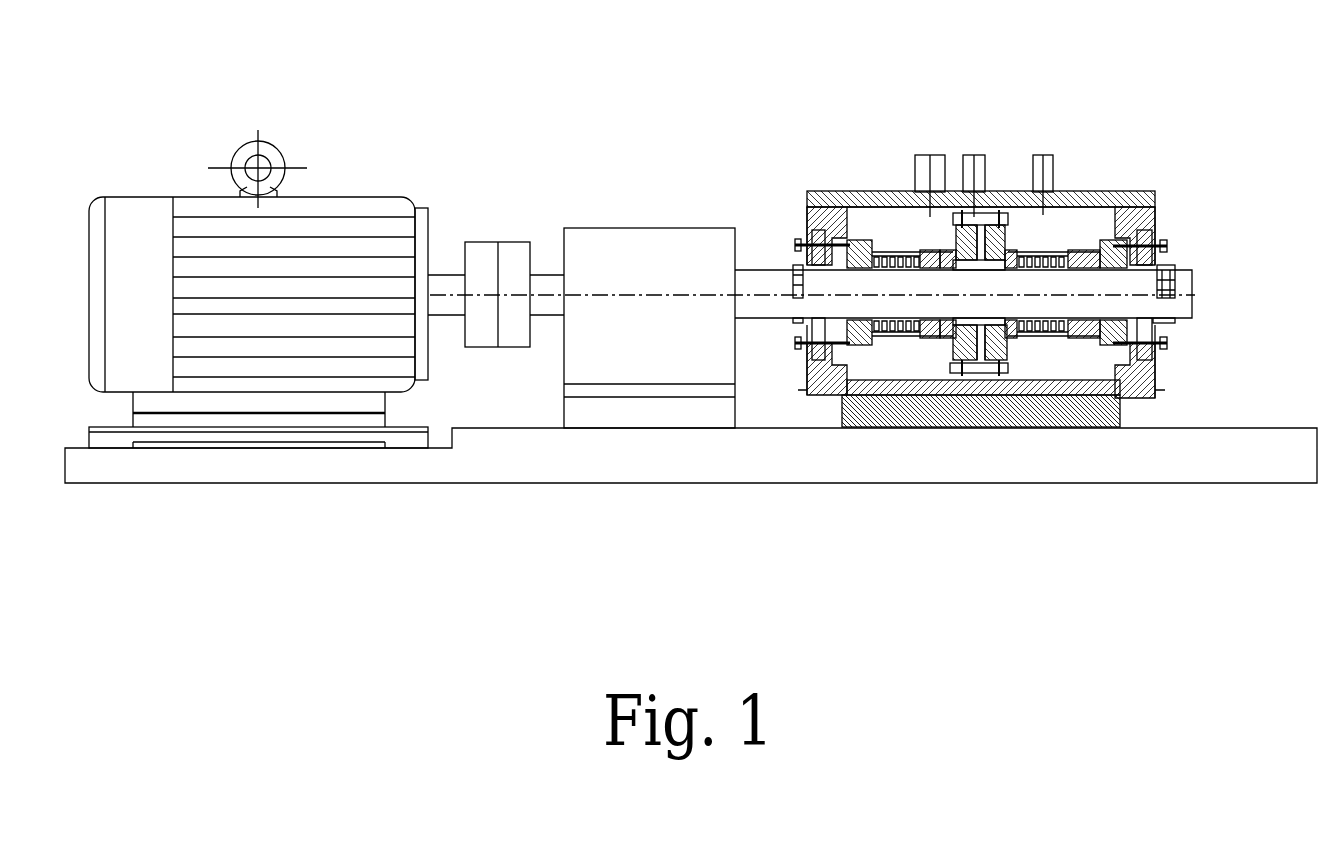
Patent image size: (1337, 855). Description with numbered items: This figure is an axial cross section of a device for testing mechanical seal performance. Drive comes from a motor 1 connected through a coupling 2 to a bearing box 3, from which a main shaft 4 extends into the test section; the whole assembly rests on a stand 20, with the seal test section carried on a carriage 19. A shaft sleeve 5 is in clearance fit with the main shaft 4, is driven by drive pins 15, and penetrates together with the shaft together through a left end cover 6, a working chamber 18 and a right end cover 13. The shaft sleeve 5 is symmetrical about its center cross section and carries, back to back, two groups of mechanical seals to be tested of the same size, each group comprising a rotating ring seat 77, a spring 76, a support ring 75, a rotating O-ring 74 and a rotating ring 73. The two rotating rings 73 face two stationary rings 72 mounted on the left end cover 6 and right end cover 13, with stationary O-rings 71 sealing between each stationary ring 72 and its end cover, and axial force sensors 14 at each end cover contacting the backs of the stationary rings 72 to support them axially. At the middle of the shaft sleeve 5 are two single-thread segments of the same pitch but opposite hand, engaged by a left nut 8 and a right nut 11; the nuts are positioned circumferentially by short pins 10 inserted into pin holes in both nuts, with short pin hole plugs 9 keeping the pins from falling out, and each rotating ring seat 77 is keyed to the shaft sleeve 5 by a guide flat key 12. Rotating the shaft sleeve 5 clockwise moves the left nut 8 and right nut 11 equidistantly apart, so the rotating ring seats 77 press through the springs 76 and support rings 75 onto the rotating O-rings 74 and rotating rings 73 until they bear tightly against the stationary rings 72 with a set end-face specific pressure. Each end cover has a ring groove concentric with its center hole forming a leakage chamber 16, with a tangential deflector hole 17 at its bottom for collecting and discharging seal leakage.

The motor 1 is at (362, 227).
The coupling 2 is at (480, 257).
The bearing box 3 is at (602, 238).
The main shaft 4 is at (767, 272).
The shaft sleeve 5 is at (802, 242).
The left end cover 6 is at (808, 238).
The stationary O-ring 71 is at (825, 245).
The stationary ring 72 is at (855, 255).
The rotating ring 73 is at (870, 254).
The rotating O-ring 74 is at (885, 258).
The support ring 75 is at (896, 256).
The spring 76 is at (927, 256).
The rotating ring seat 77 is at (933, 200).
The left nut 8 is at (950, 255).
The short pin hole plug 9 is at (968, 212).
The short pin 10 is at (985, 216).
The right nut 11 is at (1003, 224).
The guide flat key 12 is at (947, 264).
The right end cover 13 is at (1153, 192).
The axial force sensor 14 is at (1163, 246).
The drive pin 15 is at (1168, 290).
The leakage chamber 16 is at (1160, 343).
The deflector hole 17 is at (1145, 370).
The working chamber 18 is at (1063, 390).
The carriage 19 is at (1010, 413).
The stand 20 is at (652, 447).